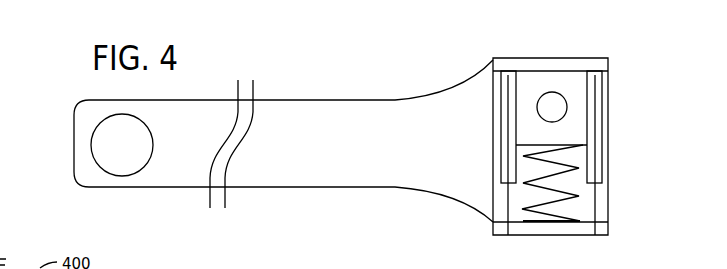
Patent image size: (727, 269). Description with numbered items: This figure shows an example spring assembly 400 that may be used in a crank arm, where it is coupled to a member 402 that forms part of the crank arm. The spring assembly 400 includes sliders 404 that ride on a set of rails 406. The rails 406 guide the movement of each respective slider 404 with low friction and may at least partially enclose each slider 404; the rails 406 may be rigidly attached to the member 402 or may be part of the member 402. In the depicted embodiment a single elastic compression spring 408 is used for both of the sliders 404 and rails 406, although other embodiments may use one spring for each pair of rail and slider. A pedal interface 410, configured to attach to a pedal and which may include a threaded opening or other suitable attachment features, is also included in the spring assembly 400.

The spring assembly 400 is at (556, 40).
The member 402 is at (312, 100).
The slider 404 is at (506, 70).
The rail 406 is at (501, 204).
The elastic compression spring 408 is at (552, 222).
The pedal interface 410 is at (556, 92).